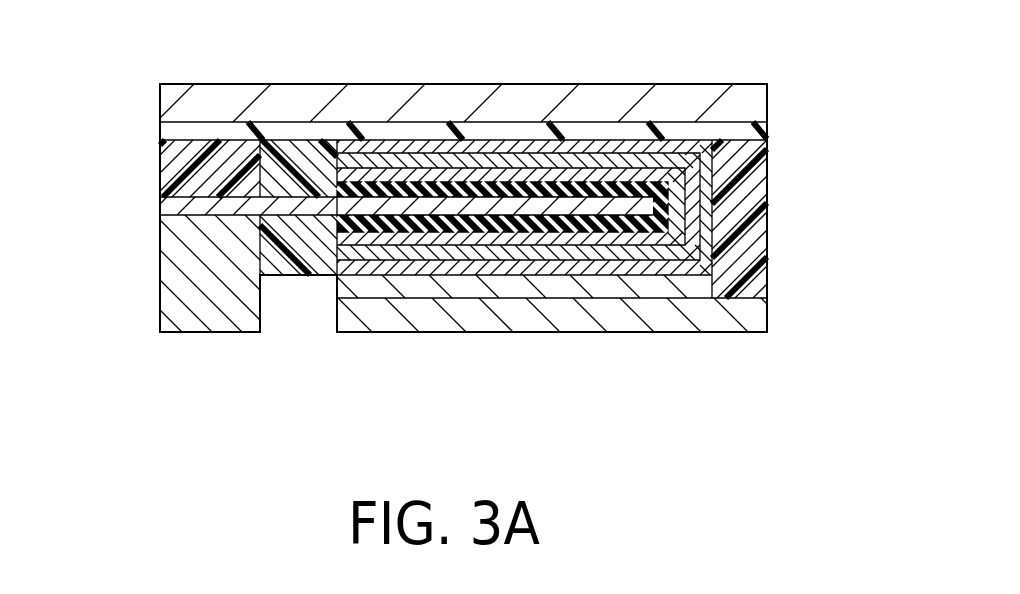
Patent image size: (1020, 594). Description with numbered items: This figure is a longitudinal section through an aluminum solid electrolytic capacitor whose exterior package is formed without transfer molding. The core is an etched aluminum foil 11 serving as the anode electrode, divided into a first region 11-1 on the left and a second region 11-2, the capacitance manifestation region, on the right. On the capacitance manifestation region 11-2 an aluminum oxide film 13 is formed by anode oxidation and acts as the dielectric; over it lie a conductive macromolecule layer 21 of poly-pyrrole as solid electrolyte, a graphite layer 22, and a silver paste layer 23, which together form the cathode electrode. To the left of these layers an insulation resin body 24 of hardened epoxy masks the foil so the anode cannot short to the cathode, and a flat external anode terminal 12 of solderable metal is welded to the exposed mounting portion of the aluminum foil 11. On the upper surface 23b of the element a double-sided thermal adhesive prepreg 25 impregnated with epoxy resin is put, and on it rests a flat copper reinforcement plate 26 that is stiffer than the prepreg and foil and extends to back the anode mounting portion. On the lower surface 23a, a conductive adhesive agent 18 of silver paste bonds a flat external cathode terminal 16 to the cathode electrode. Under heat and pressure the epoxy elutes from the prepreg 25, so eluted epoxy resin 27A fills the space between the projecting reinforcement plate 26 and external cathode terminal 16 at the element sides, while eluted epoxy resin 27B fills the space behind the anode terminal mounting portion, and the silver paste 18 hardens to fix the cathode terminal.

The aluminum foil 11 is at (165, 213).
The first region of the aluminum foil 11-1 is at (230, 207).
The second region of the aluminum foil (capacitance manifestation region) 11-2 is at (665, 205).
The external anode terminal 12 is at (203, 313).
The aluminum oxide film 13 is at (645, 190).
The external cathode terminal 16 is at (520, 312).
The conductive adhesive agent 18 is at (365, 282).
The conductive macromolecule layer 21 is at (578, 175).
The graphite layer 22 is at (515, 160).
The silver paste layer 23 is at (370, 142).
The lower surface 23a is at (678, 272).
The upper surface 23b is at (440, 138).
The insulation resin body 24 is at (303, 160).
The double-sided thermal adhesive tape (prepreg) 25 is at (210, 120).
The reinforcement plate 26 is at (712, 135).
The eluted epoxy resin 27A is at (733, 305).
The eluted epoxy resin 27B is at (178, 165).